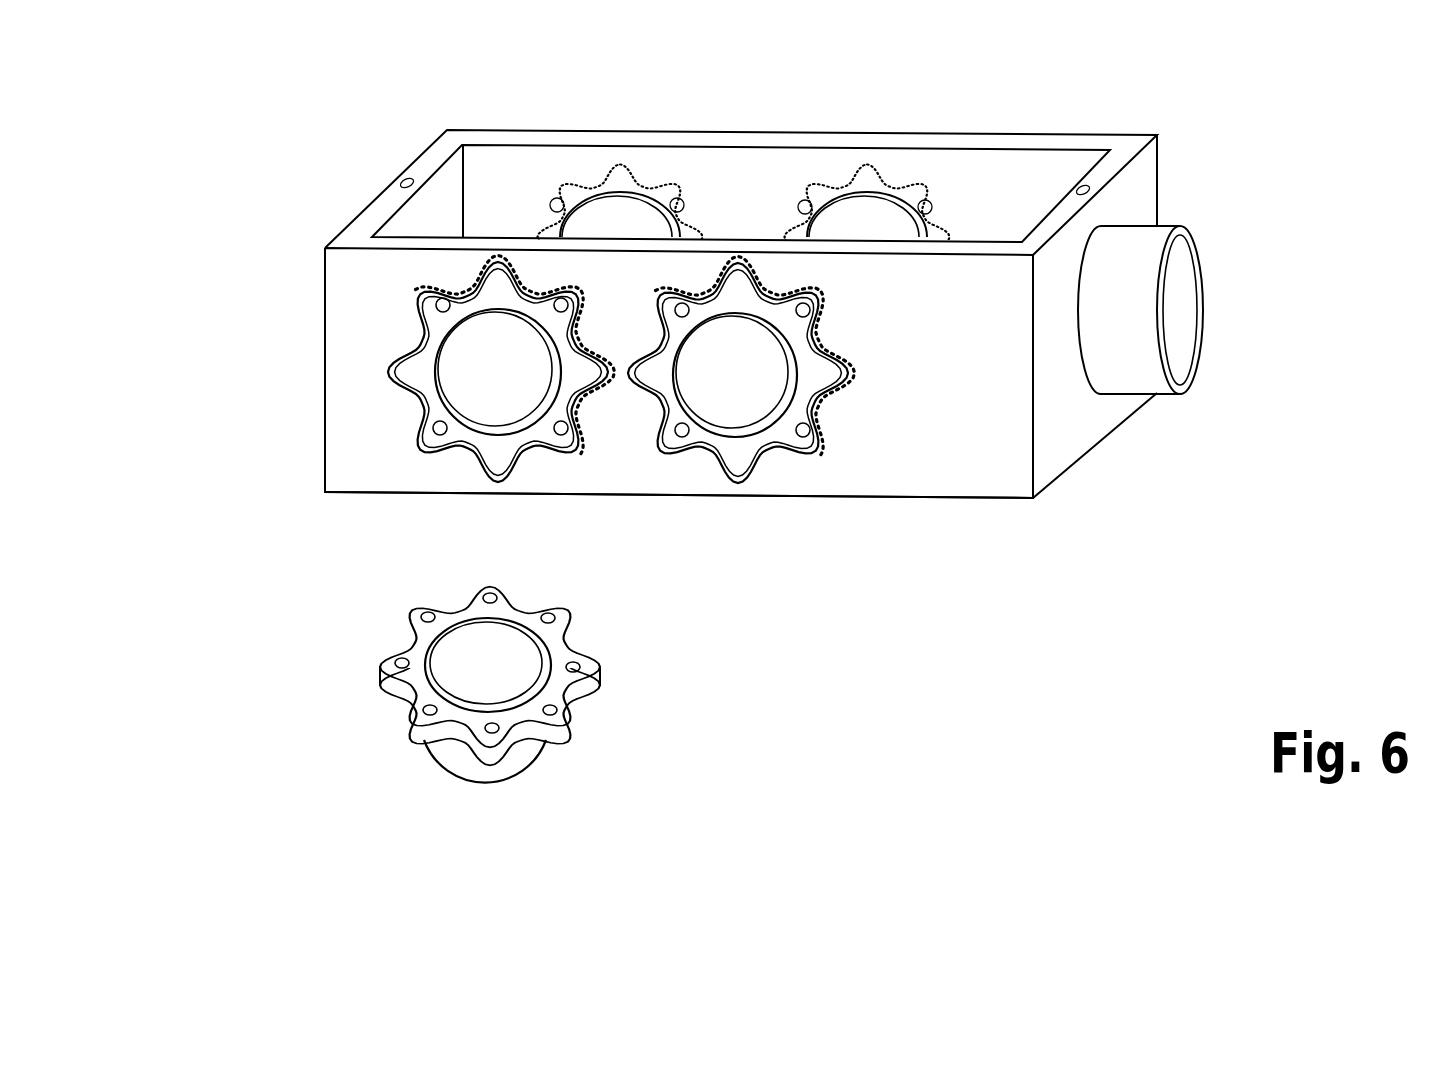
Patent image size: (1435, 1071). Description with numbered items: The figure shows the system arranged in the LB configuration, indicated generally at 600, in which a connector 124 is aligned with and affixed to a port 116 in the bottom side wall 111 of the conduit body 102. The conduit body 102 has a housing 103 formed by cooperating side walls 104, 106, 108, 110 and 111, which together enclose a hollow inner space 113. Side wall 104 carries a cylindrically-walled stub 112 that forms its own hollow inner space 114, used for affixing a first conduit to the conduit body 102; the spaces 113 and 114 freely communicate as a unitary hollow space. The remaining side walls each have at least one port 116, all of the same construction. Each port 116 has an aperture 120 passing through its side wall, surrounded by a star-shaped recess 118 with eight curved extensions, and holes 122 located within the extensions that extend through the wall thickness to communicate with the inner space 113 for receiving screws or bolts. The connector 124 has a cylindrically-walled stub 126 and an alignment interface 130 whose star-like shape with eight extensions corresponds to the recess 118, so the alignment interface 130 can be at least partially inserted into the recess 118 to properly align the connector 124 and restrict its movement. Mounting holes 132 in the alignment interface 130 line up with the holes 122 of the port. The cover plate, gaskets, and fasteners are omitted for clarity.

The conduit body 102 is at (1033, 523).
The housing 103 is at (922, 478).
The side wall 104 is at (1125, 196).
The side wall 106 is at (1123, 133).
The side wall 108 is at (932, 450).
The side wall 110 is at (436, 136).
The bottom side wall 111 is at (385, 494).
The cylindrically-walled stub 112 is at (1145, 380).
The hollow inner space 113 is at (503, 200).
The hollow inner space 114 is at (1180, 347).
The port 116 is at (618, 158).
The recess 118 is at (748, 482).
The aperture 120 is at (722, 390).
The hole 122 is at (682, 437).
The connector 124 is at (383, 776).
The cylindrically-walled stub 126 is at (460, 800).
The alignment interface 130 is at (383, 683).
The mounting hole 132 is at (403, 660).
The LB configuration 600 is at (856, 731).